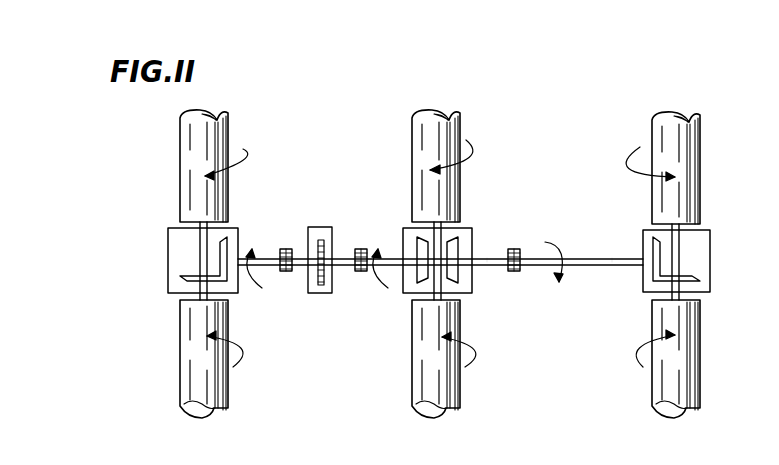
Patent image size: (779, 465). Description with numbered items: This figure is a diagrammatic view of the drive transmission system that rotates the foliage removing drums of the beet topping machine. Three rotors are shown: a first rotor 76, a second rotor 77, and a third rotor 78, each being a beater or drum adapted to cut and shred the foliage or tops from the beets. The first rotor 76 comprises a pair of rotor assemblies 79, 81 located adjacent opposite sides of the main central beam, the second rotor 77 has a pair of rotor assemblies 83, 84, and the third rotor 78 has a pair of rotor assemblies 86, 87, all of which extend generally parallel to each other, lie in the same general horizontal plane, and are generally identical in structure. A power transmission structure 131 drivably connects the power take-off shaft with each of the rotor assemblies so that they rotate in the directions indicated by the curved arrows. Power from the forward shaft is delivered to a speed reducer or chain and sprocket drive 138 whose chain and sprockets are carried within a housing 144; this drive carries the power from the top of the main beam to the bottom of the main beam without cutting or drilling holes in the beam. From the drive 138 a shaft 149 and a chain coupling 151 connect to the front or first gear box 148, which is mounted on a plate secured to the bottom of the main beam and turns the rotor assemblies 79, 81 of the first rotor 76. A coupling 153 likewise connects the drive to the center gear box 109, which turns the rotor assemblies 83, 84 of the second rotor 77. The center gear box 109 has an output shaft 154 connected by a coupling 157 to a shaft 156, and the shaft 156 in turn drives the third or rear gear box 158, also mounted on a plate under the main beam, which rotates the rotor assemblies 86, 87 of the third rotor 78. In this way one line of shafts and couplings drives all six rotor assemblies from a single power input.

The first rotor 76 is at (184, 224).
The second rotor 77 is at (455, 224).
The third rotor 78 is at (702, 224).
The rotor assembly 79 is at (188, 366).
The rotor assembly 81 is at (183, 136).
The rotor assembly 83 is at (462, 385).
The rotor assembly 84 is at (420, 143).
The rotor assembly 86 is at (692, 375).
The rotor assembly 87 is at (695, 138).
The center gear box 109 is at (474, 291).
The power transmission structure 131 is at (385, 342).
The chain and sprocket drive 138 is at (324, 236).
The housing 144 is at (327, 293).
The first gear box 148 is at (168, 262).
The shaft 149 is at (272, 266).
The chain coupling 151 is at (287, 247).
The coupling 153 is at (362, 247).
The output shaft 154 is at (489, 255).
The shaft 156 is at (612, 256).
The coupling 157 is at (522, 252).
The rear gear box 158 is at (710, 262).